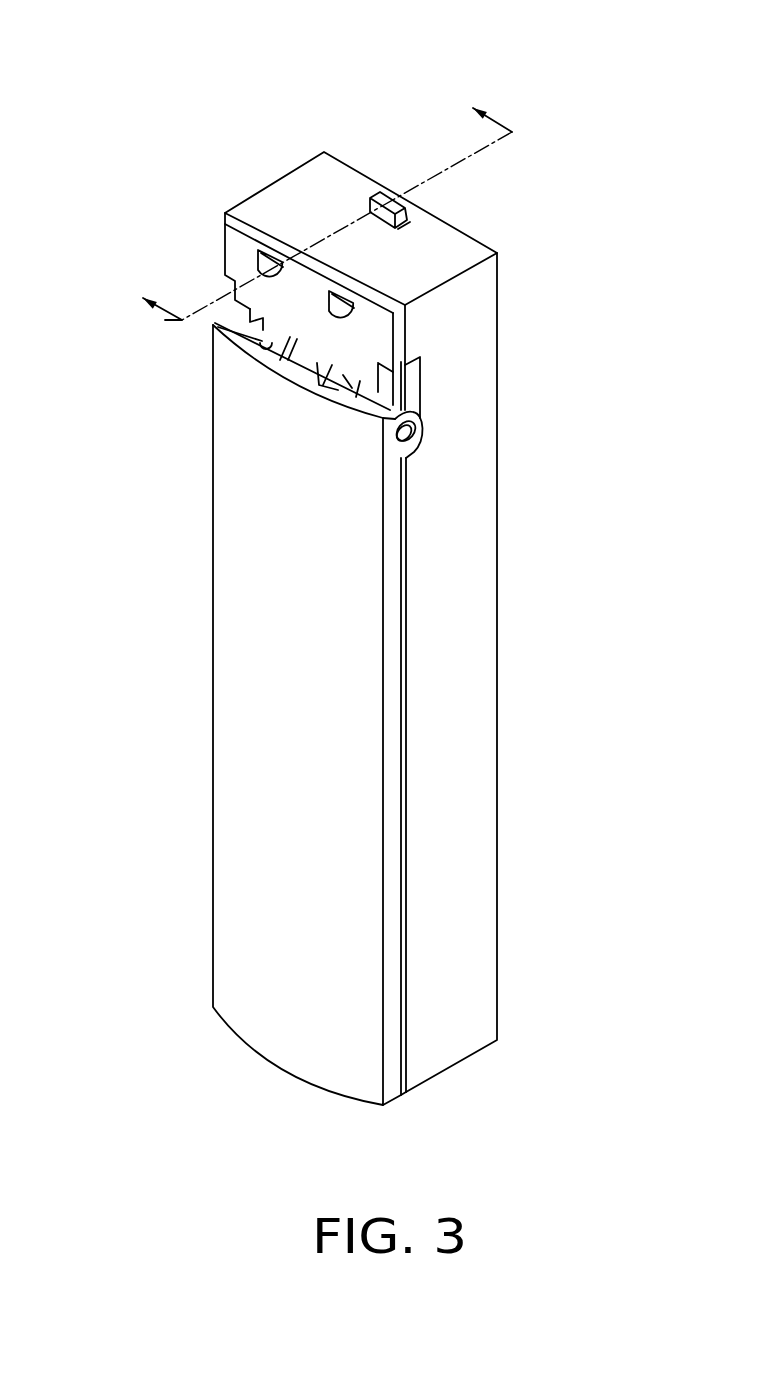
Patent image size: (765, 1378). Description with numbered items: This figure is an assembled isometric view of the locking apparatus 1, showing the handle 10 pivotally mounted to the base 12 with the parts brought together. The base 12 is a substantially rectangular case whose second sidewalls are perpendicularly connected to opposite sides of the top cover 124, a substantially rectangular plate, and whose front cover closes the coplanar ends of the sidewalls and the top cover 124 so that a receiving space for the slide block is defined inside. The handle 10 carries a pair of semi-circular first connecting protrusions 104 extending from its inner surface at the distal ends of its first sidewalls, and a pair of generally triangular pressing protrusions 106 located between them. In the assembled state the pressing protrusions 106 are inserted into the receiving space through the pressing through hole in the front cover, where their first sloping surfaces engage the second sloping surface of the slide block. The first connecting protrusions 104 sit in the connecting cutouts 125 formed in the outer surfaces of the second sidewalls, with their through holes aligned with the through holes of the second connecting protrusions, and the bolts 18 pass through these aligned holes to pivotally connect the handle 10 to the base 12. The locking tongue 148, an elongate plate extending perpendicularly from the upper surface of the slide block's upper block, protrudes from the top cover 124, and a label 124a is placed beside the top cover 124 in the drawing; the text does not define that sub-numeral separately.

The locking apparatus 1 is at (313, 43).
The handle 10 is at (250, 663).
The base 12 is at (462, 690).
The bolts 18 is at (407, 434).
The first connecting protrusions 104 is at (418, 417).
The pressing protrusions 106 is at (300, 360).
The top cover 124 is at (472, 254).
The top surface 124a is at (406, 222).
The connecting cutout 125 is at (413, 372).
The locking tongue 148 is at (401, 200).